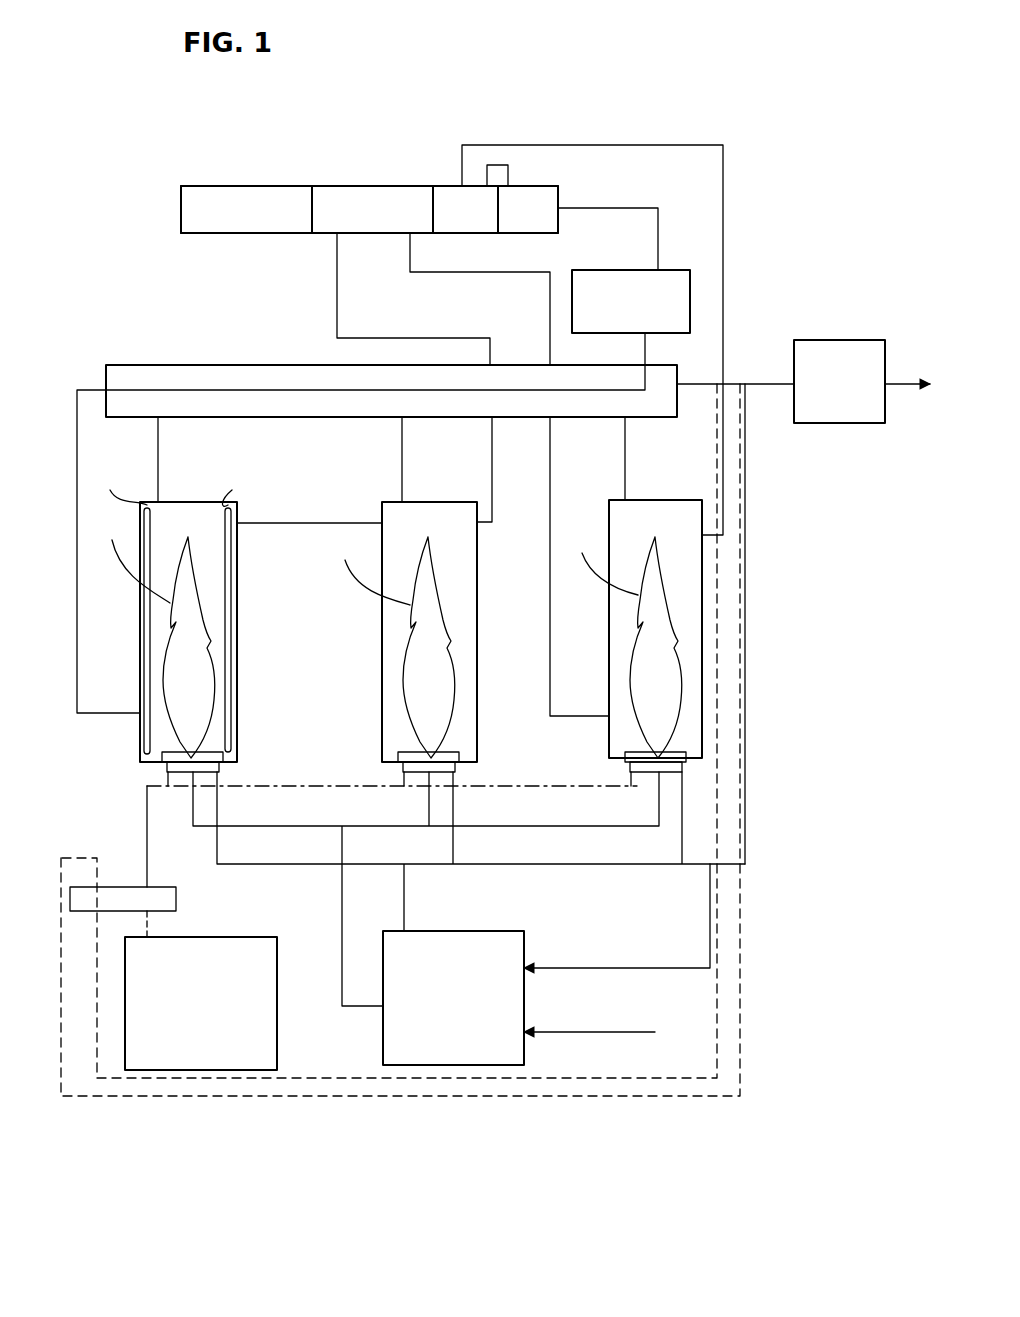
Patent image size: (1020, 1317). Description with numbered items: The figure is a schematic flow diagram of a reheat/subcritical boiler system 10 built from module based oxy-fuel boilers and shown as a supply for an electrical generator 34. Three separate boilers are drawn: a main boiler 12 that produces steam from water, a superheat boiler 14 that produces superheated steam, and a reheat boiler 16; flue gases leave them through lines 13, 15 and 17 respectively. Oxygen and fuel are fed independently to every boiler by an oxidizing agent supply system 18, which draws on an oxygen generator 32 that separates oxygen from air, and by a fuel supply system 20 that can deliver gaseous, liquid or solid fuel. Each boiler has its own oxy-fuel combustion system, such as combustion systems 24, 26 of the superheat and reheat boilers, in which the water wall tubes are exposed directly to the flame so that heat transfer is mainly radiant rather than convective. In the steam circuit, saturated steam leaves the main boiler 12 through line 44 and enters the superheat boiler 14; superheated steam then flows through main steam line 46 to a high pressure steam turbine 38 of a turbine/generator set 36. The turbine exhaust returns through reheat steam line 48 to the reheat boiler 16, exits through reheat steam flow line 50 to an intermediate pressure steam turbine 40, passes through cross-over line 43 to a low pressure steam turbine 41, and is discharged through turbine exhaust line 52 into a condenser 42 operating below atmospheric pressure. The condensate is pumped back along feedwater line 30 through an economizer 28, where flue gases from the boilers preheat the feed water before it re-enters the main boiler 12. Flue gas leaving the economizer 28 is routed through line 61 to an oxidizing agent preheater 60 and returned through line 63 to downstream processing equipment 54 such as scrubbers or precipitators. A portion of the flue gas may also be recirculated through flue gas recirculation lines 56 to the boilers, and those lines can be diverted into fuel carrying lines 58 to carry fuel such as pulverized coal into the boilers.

The boiler system 10 is at (770, 172).
The main boiler 12 is at (140, 652).
The flue gas line 13 is at (158, 478).
The superheat boiler 14 is at (394, 632).
The flue gas line 15 is at (402, 472).
The reheat boiler 16 is at (702, 585).
The flue gas line 17 is at (625, 472).
The oxidizing agent supply system 18 is at (285, 968).
The fuel supply system 20 is at (366, 1033).
The oxy-fuel combustion system 24 is at (465, 772).
The oxy-fuel combustion system 26 is at (692, 765).
The economizer 28 is at (183, 372).
The feedwater line 30 is at (77, 490).
The oxygen generator 32 is at (201, 1060).
The electrical generator 34 is at (190, 186).
The turbine/generator set 36 is at (268, 174).
The high pressure steam turbine 38 is at (360, 198).
The intermediate pressure steam turbine 40 is at (452, 198).
The low pressure steam turbine 41 is at (544, 200).
The condenser 42 is at (690, 302).
The cross-over line 43 is at (498, 165).
The line 44 is at (288, 523).
The main steam line 46 is at (337, 292).
The reheat steam line 48 is at (550, 630).
The reheat steam flow line 50 is at (571, 147).
The turbine exhaust line 52 is at (624, 206).
The downstream processing equipment 54 is at (838, 348).
The flue gas recirculation lines 56 is at (745, 500).
The fuel carrying lines 58 is at (150, 797).
The oxidizing agent preheater 60 is at (130, 887).
The line 61 is at (718, 888).
The line 63 is at (741, 945).